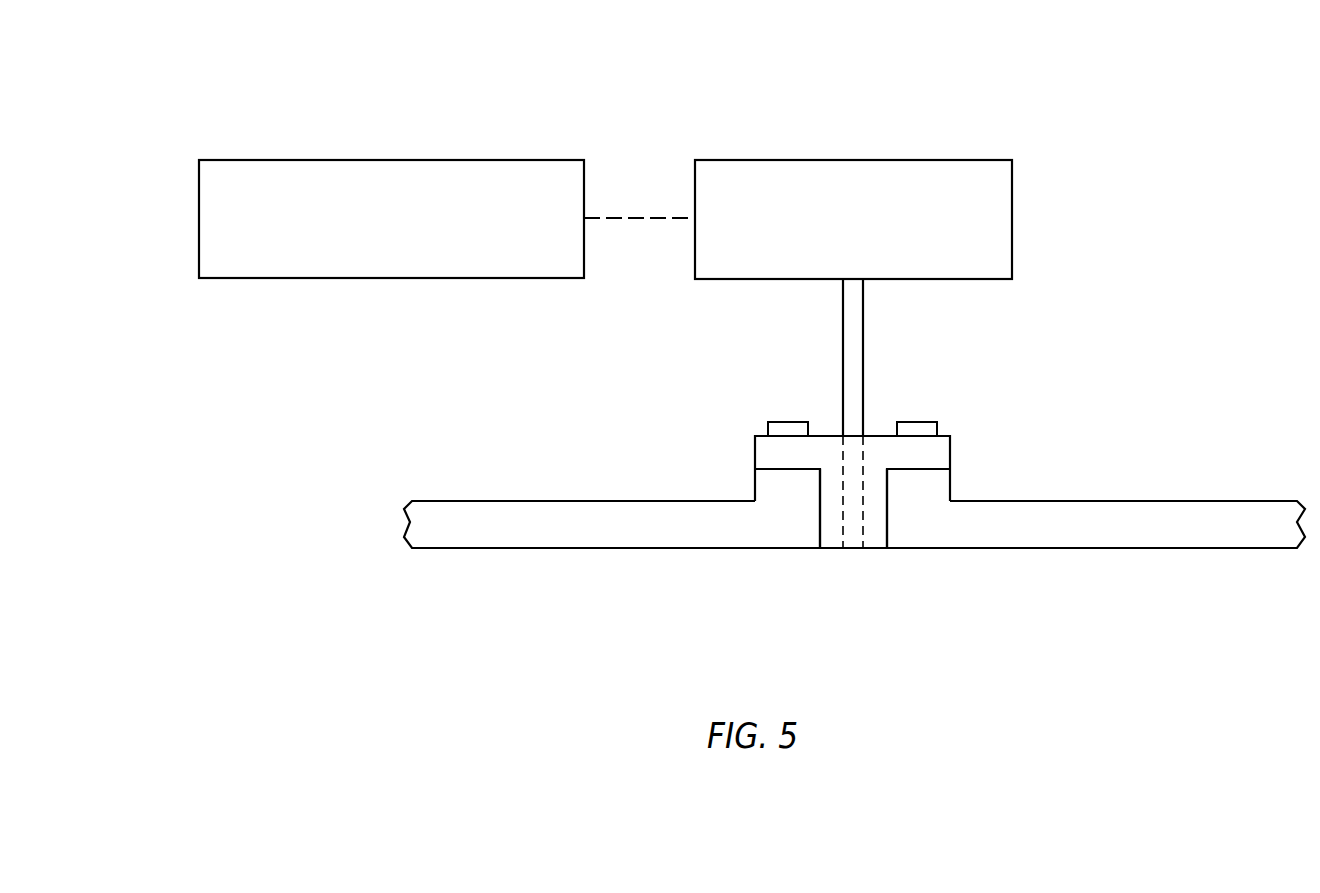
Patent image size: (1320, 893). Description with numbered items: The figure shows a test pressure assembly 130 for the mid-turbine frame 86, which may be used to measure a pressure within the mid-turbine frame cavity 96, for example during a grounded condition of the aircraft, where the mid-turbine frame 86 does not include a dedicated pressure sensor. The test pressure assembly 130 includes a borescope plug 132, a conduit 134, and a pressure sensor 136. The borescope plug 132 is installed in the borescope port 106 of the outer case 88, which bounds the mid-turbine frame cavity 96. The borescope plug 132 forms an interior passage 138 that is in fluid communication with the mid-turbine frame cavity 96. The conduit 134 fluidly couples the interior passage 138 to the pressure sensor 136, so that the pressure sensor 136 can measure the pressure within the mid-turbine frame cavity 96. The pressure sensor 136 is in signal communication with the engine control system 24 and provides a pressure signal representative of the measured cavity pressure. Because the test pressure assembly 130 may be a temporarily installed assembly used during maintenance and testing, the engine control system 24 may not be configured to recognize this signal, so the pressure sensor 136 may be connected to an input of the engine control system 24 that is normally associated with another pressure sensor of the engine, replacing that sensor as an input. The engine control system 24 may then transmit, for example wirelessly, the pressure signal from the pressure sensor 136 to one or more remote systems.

The engine control system 24 is at (378, 160).
The pressure sensor 136 is at (898, 160).
The test pressure assembly 130 is at (1101, 120).
The conduit 134 is at (863, 335).
The borescope plug 132 is at (755, 448).
The borescope port 106 is at (887, 497).
The interior passage 138 is at (853, 525).
The mid-turbine frame 86 is at (1167, 467).
The outer case 88 is at (1150, 548).
The mid-turbine frame cavity 96 is at (838, 678).